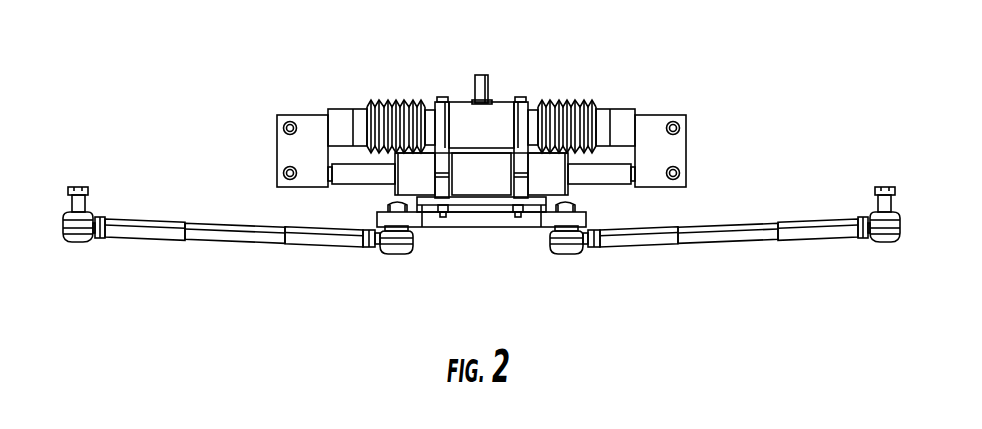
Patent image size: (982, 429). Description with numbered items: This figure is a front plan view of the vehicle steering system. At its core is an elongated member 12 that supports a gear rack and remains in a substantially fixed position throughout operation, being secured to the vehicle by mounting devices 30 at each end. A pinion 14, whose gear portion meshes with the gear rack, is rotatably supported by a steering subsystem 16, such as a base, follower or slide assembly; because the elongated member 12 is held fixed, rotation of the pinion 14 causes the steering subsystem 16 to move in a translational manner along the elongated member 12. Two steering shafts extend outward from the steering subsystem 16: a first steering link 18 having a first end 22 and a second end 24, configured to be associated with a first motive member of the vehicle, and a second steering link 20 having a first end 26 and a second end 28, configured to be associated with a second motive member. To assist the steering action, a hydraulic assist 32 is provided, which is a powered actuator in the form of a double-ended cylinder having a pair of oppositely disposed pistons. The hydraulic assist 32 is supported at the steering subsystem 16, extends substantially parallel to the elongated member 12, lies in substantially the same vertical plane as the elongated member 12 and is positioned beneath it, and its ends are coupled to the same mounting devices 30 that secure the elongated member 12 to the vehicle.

The elongated member 12 is at (623, 113).
The pinion 14 is at (488, 88).
The steering subsystem 16 is at (447, 82).
The first steering link 18 is at (230, 242).
The second steering link 20 is at (743, 238).
The first end 22 is at (352, 243).
The second end 24 is at (115, 242).
The first end 26 is at (620, 243).
The second end 28 is at (830, 233).
The mounting device 30 is at (696, 150).
The hydraulic assist 32 is at (365, 175).